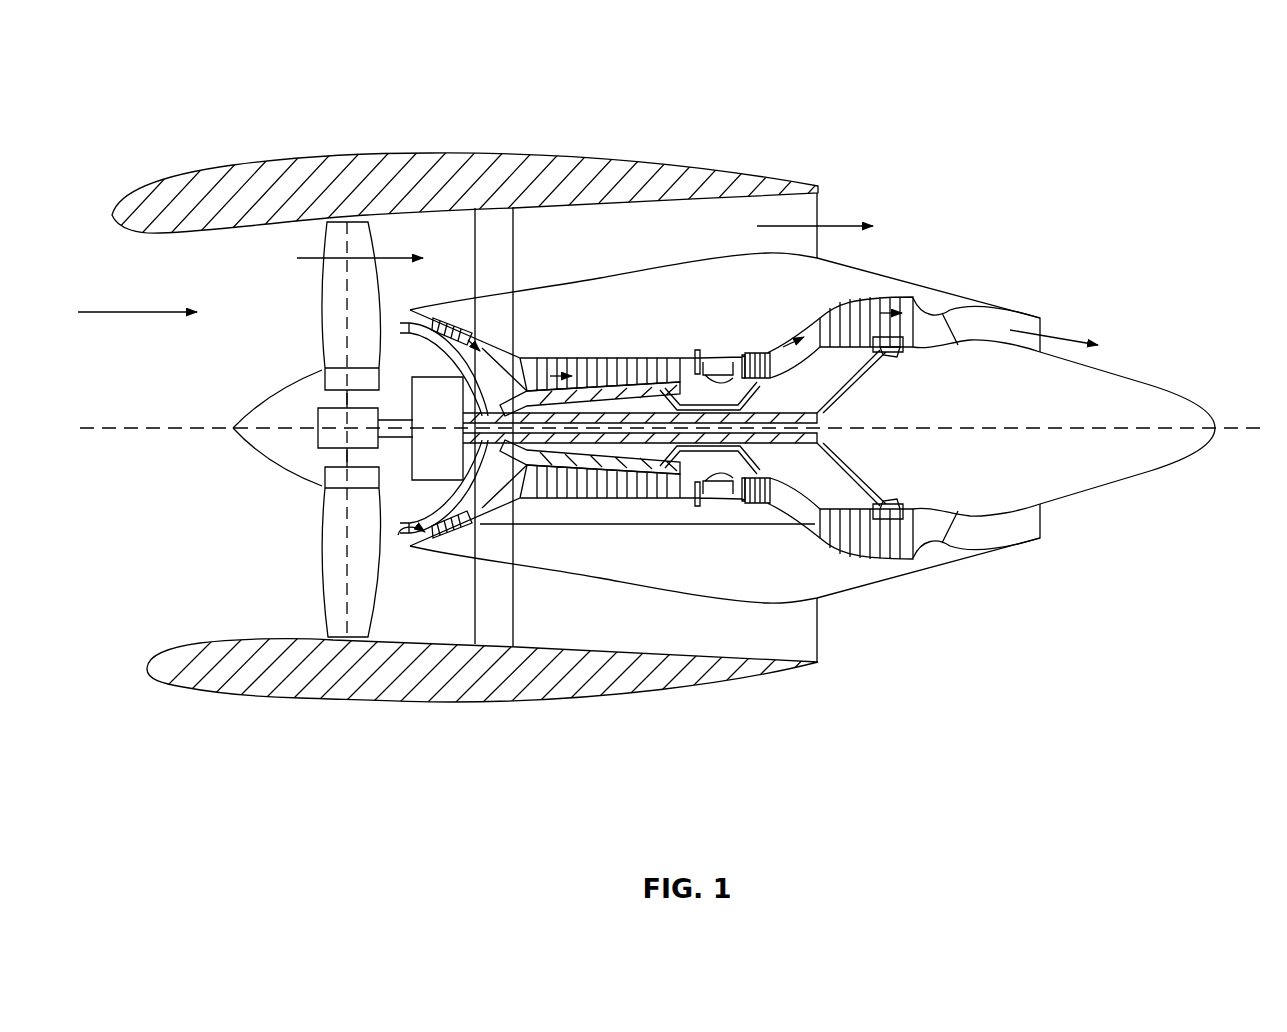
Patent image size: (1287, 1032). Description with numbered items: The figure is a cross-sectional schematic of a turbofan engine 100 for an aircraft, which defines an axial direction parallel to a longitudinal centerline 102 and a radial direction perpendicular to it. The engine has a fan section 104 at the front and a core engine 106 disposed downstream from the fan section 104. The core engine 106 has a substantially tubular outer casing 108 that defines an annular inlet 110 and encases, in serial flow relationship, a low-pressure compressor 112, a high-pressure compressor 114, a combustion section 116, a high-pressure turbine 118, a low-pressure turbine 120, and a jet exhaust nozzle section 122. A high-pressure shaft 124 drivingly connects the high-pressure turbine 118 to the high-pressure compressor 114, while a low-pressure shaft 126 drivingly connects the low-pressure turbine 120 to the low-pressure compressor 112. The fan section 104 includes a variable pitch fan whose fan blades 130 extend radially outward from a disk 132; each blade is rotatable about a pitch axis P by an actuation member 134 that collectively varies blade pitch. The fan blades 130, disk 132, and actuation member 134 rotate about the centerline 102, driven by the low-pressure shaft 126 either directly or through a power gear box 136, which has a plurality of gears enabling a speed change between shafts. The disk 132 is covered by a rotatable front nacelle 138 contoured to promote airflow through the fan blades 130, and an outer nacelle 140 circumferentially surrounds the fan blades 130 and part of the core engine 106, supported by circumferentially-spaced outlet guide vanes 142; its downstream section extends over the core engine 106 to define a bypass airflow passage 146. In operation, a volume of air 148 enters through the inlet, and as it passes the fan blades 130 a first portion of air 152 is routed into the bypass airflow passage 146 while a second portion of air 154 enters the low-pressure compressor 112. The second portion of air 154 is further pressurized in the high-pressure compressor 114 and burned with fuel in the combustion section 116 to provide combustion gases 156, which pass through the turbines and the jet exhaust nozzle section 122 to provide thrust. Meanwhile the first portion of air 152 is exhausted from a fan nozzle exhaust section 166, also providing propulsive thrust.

The turbofan engine 100 is at (207, 80).
The longitudinal centerline 102 is at (1175, 427).
The fan section 104 is at (148, 177).
The core engine 106 is at (678, 291).
The outer casing 108 is at (670, 594).
The annular inlet 110 is at (398, 535).
The low-pressure compressor 112 is at (463, 507).
The high-pressure compressor 114 is at (556, 490).
The combustion section 116 is at (712, 492).
The high-pressure turbine 118 is at (776, 506).
The low-pressure turbine 120 is at (909, 541).
The jet exhaust nozzle section 122 is at (982, 528).
The high-pressure shaft 124 is at (688, 385).
The low-pressure shaft 126 is at (797, 408).
The fan blades 130 is at (322, 573).
The disk 132 is at (330, 377).
The actuation member 134 is at (318, 424).
The power gear box 136 is at (433, 388).
The front nacelle 138 is at (233, 432).
The outer nacelle 140 is at (310, 703).
The outlet guide vanes 142 is at (517, 232).
The bypass airflow passage 146 is at (657, 247).
The volume of air 148 is at (153, 308).
The first portion of air 152 is at (333, 258).
The second portion of air 154 is at (402, 320).
The combustion gases 156 is at (752, 362).
The fan nozzle exhaust section 166 is at (808, 213).
The pitch axis P is at (348, 240).